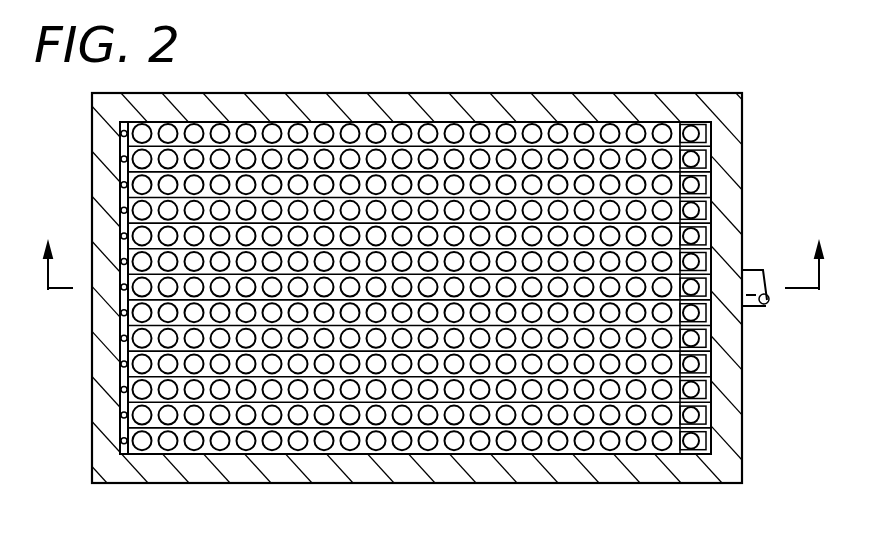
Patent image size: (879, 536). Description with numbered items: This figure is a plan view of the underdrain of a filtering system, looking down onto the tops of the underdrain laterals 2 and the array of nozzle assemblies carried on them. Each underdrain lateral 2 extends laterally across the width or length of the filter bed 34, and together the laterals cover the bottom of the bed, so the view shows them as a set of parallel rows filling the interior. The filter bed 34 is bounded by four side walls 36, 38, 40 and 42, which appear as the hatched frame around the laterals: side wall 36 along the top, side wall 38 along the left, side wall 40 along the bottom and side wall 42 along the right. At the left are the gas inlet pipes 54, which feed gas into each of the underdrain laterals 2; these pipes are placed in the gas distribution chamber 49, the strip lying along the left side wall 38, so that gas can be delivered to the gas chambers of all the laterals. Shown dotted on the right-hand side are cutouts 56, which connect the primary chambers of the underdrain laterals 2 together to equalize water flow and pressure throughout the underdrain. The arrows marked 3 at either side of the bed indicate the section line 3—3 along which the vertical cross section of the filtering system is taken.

The underdrain lateral 2 is at (656, 126).
The section line 3— 3 is at (436, 249).
The filter bed 34 is at (382, 92).
The side wall 36 is at (574, 116).
The side wall 38 is at (100, 352).
The side wall 40 is at (497, 474).
The side wall 42 is at (730, 403).
The gas distribution chamber 49 is at (118, 307).
The gas inlet pipe 54 is at (118, 413).
The cutout 56 is at (708, 160).